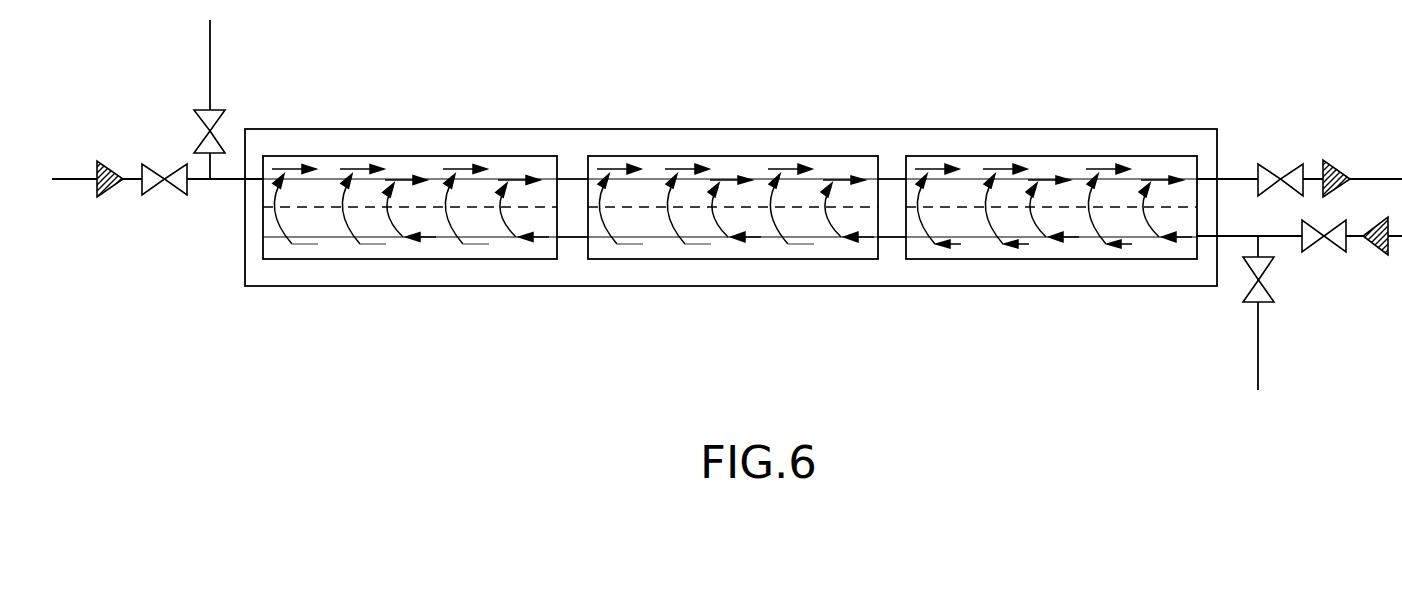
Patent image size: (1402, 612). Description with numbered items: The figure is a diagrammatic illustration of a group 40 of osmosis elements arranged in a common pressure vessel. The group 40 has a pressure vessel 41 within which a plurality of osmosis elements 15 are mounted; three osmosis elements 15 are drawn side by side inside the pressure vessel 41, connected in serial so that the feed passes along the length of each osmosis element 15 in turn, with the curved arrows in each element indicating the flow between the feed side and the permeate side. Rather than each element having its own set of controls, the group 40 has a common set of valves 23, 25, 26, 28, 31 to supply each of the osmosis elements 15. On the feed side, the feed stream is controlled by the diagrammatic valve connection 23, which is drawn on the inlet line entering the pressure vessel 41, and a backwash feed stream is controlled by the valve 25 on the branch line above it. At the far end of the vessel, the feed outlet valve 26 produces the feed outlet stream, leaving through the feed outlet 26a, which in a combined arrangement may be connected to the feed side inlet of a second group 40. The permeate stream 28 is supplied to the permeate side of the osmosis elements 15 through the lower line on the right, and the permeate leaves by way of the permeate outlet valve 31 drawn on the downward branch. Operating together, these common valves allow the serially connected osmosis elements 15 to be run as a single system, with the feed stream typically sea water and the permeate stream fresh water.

The osmosis element 15 is at (437, 156).
The feed valve connection 23 is at (176, 191).
The backwash feed valve 25 is at (194, 110).
The feed outlet valve 26 is at (1291, 164).
The feed outlet 26a is at (1233, 178).
The permeate stream 28 is at (1333, 248).
The permeate outlet valve 31 is at (1245, 288).
The group of osmosis elements 40 is at (1090, 98).
The pressure vessel 41 is at (310, 129).